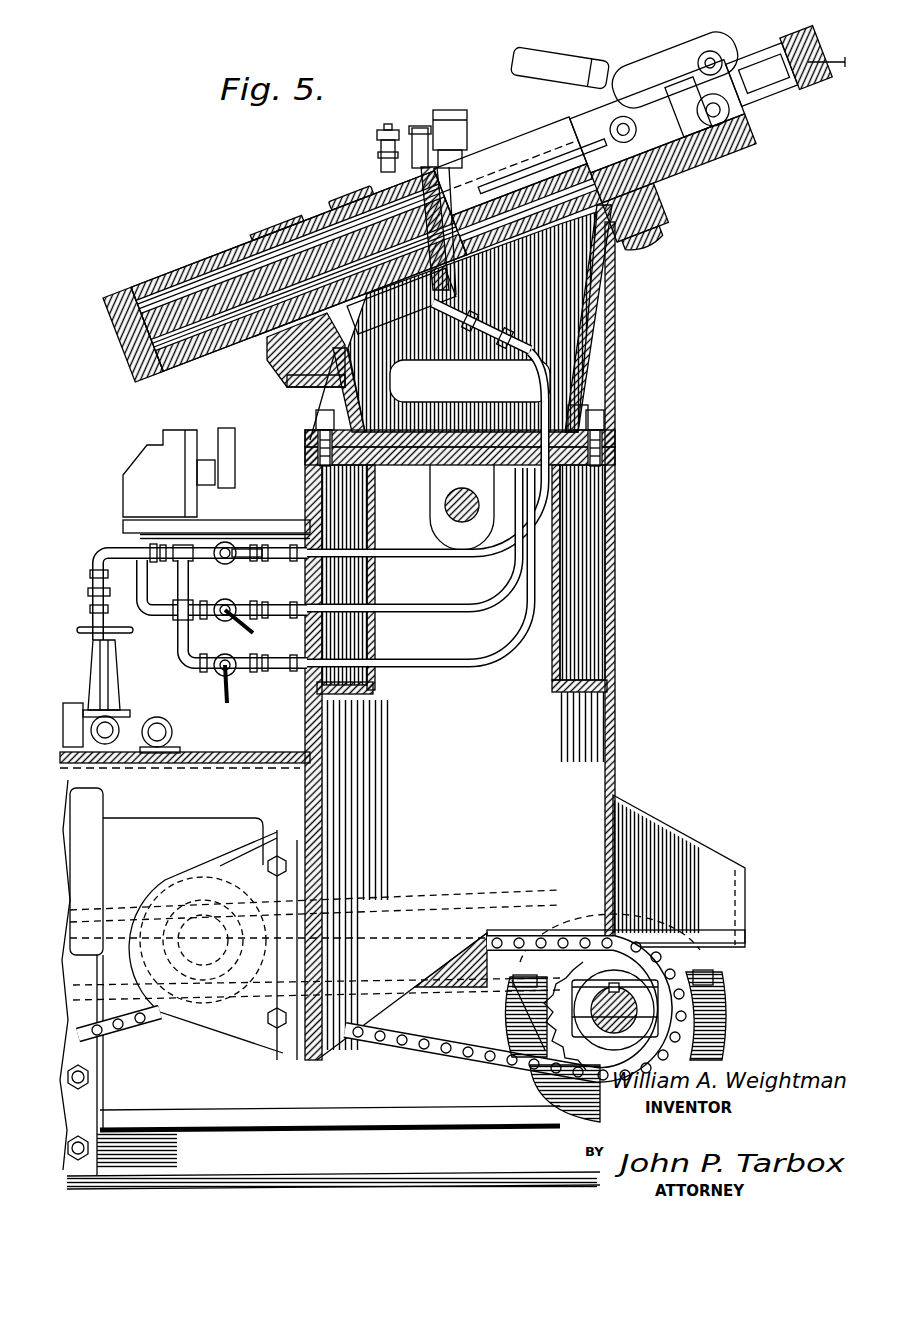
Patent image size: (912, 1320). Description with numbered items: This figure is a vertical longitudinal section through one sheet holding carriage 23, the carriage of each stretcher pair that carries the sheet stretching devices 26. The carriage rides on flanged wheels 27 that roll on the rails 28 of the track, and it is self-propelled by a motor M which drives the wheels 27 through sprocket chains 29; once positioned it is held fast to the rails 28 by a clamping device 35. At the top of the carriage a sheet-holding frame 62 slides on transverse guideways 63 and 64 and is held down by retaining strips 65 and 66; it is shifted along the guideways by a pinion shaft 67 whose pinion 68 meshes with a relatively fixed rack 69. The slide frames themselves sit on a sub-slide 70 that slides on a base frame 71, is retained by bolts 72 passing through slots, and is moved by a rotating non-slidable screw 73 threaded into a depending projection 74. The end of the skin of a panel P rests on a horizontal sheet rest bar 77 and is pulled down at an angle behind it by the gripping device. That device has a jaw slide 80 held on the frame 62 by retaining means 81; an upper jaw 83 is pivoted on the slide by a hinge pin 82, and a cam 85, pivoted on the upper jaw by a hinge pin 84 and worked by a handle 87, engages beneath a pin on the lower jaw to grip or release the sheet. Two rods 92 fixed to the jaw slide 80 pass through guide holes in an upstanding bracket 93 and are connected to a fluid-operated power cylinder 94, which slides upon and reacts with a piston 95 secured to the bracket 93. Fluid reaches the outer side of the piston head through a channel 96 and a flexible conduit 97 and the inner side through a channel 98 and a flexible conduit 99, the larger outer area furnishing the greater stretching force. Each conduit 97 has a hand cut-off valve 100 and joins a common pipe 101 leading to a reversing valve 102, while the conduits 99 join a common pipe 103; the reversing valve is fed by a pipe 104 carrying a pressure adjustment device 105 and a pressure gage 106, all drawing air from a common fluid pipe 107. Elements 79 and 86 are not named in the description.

The sheet holding carriage 23 is at (618, 737).
The sheet stretching device 26 is at (180, 273).
The flanged wheel 27 is at (724, 1010).
The rail 28 is at (360, 1110).
The sprocket chain 29 is at (130, 1030).
The clamping device 35 is at (83, 1107).
The sheet-holding frame 62 is at (724, 162).
The transverse guideway 63 is at (272, 358).
The transverse guideway 64 is at (640, 214).
The retaining strip 65 is at (287, 384).
The retaining strip 66 is at (648, 241).
The pinion shaft 67 is at (468, 142).
The pinion 68 is at (444, 309).
The rack 69 is at (540, 290).
The sub-slide 70 is at (590, 410).
The base frame 71 is at (615, 456).
The bolt 72 is at (317, 438).
The screw 73 is at (466, 518).
The depending projection 74 is at (446, 524).
The sheet rest bar 77 is at (810, 102).
The pin 79 is at (772, 93).
The jaw slide 80 is at (610, 248).
The retaining means 81 is at (708, 170).
The hinge pin 82 is at (630, 127).
The upper jaw 83 is at (765, 57).
The hinge pin 84 is at (693, 53).
The cam 85 is at (697, 153).
The link 86 is at (722, 125).
The handle 87 is at (577, 64).
The rod 92 is at (563, 163).
The bracket 93 is at (420, 167).
The fluid-operated power cylinder 94 is at (228, 257).
The piston 95 is at (153, 287).
The channel 96 is at (267, 240).
The flexible conduit 97 is at (500, 545).
The channel 98 is at (333, 207).
The flexible conduit 99 is at (380, 153).
The hand cut-off valve 100 is at (223, 570).
The common pipe 101 is at (140, 567).
The reversing valve 102 is at (130, 492).
The common pipe 103 is at (160, 555).
The pipe 104 is at (107, 670).
The pressure adjustment device 105 is at (120, 687).
The pressure gage 106 is at (68, 702).
The common fluid pipe 107 is at (172, 730).
The motor M is at (90, 812).
The panel P is at (833, 58).